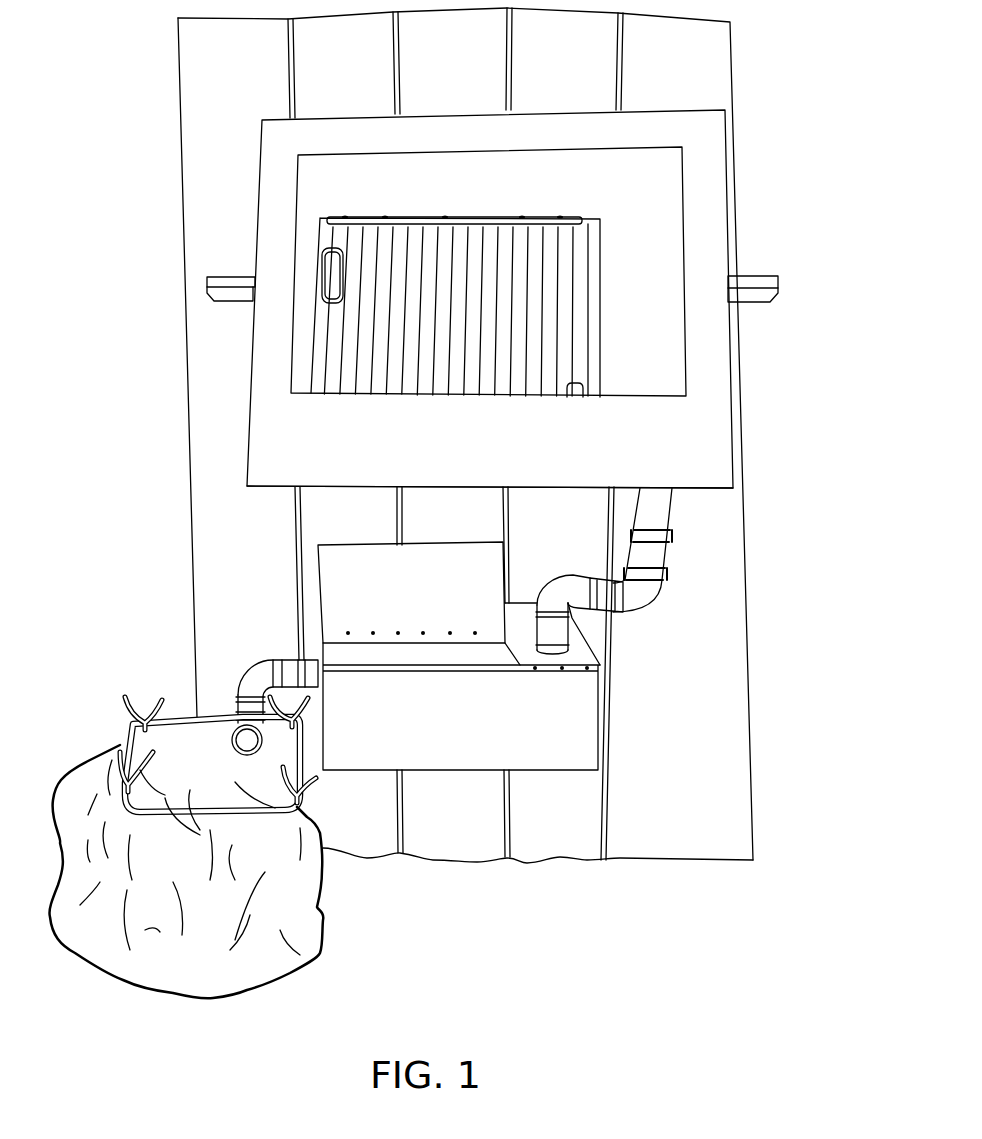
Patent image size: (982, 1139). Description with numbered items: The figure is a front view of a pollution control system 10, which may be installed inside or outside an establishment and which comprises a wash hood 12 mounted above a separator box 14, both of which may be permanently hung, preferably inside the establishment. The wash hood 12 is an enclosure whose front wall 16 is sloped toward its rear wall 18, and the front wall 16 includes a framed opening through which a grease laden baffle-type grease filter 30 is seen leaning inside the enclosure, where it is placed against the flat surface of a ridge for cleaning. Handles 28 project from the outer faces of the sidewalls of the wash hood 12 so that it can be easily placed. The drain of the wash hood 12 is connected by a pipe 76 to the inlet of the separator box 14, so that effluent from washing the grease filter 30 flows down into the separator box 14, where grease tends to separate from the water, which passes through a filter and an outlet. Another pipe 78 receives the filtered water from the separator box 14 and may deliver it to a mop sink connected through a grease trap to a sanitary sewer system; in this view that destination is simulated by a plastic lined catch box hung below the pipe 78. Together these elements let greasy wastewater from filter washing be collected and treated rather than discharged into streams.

The pollution control system 10 is at (785, 20).
The wash hood 12 is at (730, 143).
The separator box 14 is at (603, 711).
The front wall 16 is at (491, 457).
The rear wall 18 is at (653, 213).
The handles 28 is at (224, 276).
The baffle-type grease filters 30 is at (302, 325).
The upper duct 76 is at (667, 555).
The pipe 78 is at (263, 675).